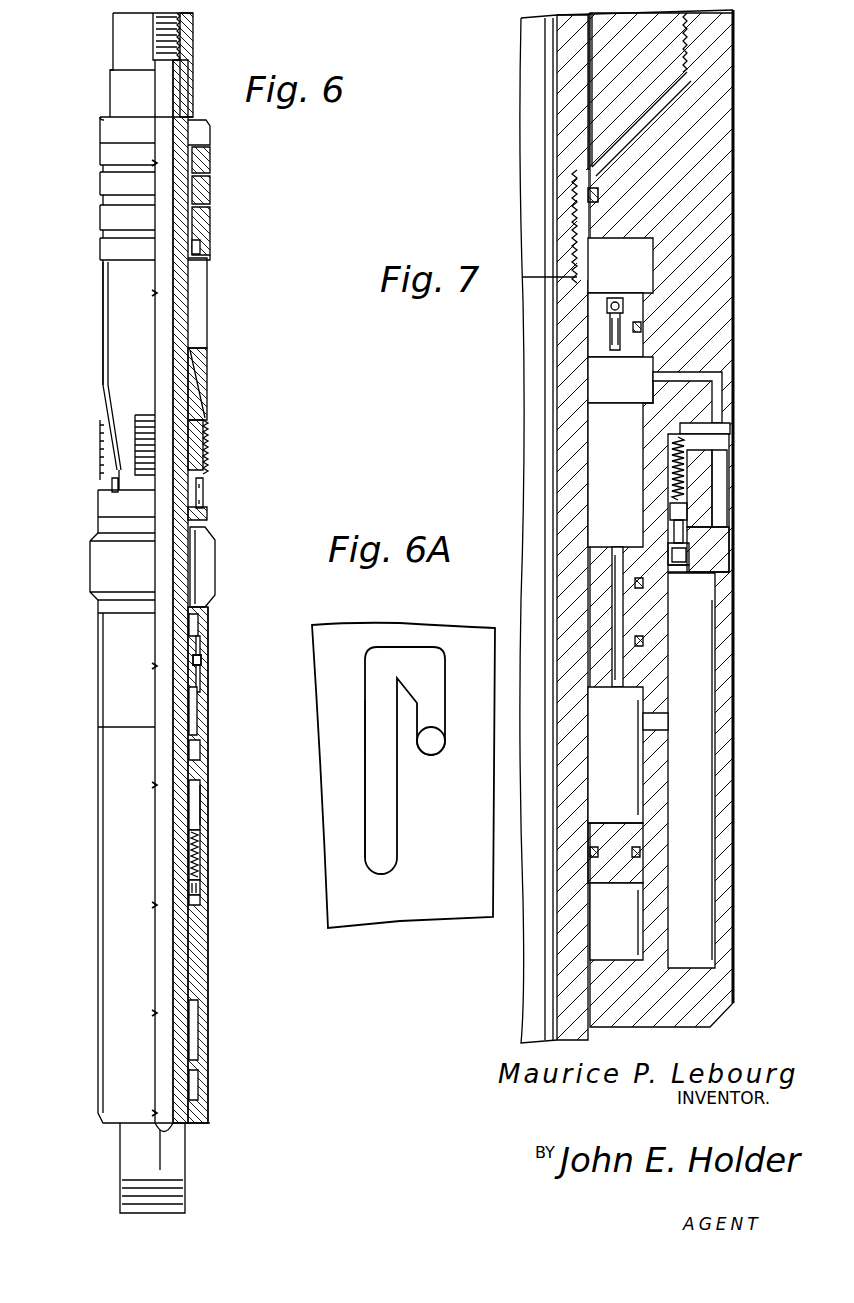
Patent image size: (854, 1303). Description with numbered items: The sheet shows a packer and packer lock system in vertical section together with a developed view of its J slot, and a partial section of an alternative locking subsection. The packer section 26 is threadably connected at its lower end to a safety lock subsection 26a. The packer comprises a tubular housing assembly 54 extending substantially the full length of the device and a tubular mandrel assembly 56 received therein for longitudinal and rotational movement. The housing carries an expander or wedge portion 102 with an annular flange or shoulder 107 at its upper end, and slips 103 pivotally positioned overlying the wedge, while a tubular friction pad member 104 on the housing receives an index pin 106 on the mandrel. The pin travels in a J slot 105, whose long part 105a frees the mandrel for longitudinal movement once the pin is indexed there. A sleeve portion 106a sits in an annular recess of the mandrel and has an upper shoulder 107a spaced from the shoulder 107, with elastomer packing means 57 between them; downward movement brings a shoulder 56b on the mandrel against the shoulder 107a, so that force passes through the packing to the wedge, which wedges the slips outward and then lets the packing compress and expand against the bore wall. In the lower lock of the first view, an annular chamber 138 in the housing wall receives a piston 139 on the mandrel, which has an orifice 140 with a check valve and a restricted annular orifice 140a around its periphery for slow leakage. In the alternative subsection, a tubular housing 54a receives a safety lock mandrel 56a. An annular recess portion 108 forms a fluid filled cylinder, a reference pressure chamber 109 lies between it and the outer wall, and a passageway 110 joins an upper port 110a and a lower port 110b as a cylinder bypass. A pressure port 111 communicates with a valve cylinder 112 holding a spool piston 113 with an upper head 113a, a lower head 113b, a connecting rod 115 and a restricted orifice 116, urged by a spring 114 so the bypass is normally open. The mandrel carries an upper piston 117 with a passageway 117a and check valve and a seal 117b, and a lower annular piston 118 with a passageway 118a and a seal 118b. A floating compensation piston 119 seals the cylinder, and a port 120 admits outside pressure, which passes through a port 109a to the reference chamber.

In FIG. 6, the packer section 26 is at (99, 345).
In FIG. 6, the safety lock subsection 26a is at (91, 857).
In FIG. 7, the safety lock subsection 26a is at (740, 157).
In FIG. 6, the tubular housing assembly 54 is at (204, 630).
In FIG. 6, the tubular housing 54a is at (202, 812).
In FIG. 7, the tubular housing 54a is at (712, 112).
In FIG. 6, the tubular mandrel assembly 56 is at (200, 511).
In FIG. 6, the safety lock mandrel 56a is at (199, 790).
In FIG. 7, the safety lock mandrel 56a is at (566, 480).
In FIG. 6, the shoulder 56b is at (117, 124).
In FIG. 6, the elastomer packing means 57 is at (213, 195).
In FIG. 6, the wedge portion 102 is at (208, 404).
In FIG. 6, the slips 103 is at (209, 455).
In FIG. 6, the friction pad member 104 is at (200, 556).
In FIG. 6, the J slot 105 is at (203, 650).
In FIG. 6A, the J slot 105 is at (418, 678).
In FIG. 6A, the long part of the slot 105a is at (383, 820).
In FIG. 6, the index pin 106 is at (201, 664).
In FIG. 6A, the index pin 106 is at (431, 755).
In FIG. 6, the sleeve portion 106a is at (213, 162).
In FIG. 6, the annular flange or shoulder 107 is at (212, 245).
In FIG. 6, the upper shoulder 107a is at (214, 140).
In FIG. 7, the annular recess portion 108 is at (630, 270).
In FIG. 7, the reference pressure chamber 109 is at (698, 629).
In FIG. 7, the port 109a is at (656, 723).
In FIG. 7, the passageway 110 is at (719, 410).
In FIG. 7, the upper port 110a is at (655, 388).
In FIG. 7, the lower port 110b is at (655, 537).
In FIG. 7, the pressure port 111 is at (725, 443).
In FIG. 7, the valve cylinder 112 is at (684, 493).
In FIG. 7, the spool piston 113 is at (684, 574).
In FIG. 7, the upper head 113a is at (689, 518).
In FIG. 7, the lower head 113b is at (688, 557).
In FIG. 7, the spring 114 is at (691, 433).
In FIG. 7, the connecting rod 115 is at (690, 548).
In FIG. 7, the restricted orifice 116 is at (687, 513).
In FIG. 7, the upper piston 117 is at (607, 313).
In FIG. 7, the passageway 117a is at (612, 330).
In FIG. 7, the seal 117b is at (641, 327).
In FIG. 7, the lower annular piston 118 is at (600, 666).
In FIG. 7, the passageway 118a is at (617, 611).
In FIG. 7, the seal 118b is at (637, 643).
In FIG. 7, the floating compensation piston 119 is at (632, 870).
In FIG. 7, the port 120 is at (595, 975).
In FIG. 6, the annular chamber 138 is at (197, 823).
In FIG. 6, the piston 139 is at (197, 848).
In FIG. 6, the orifice 140 is at (199, 867).
In FIG. 6, the restricted annular orifice 140a is at (199, 887).